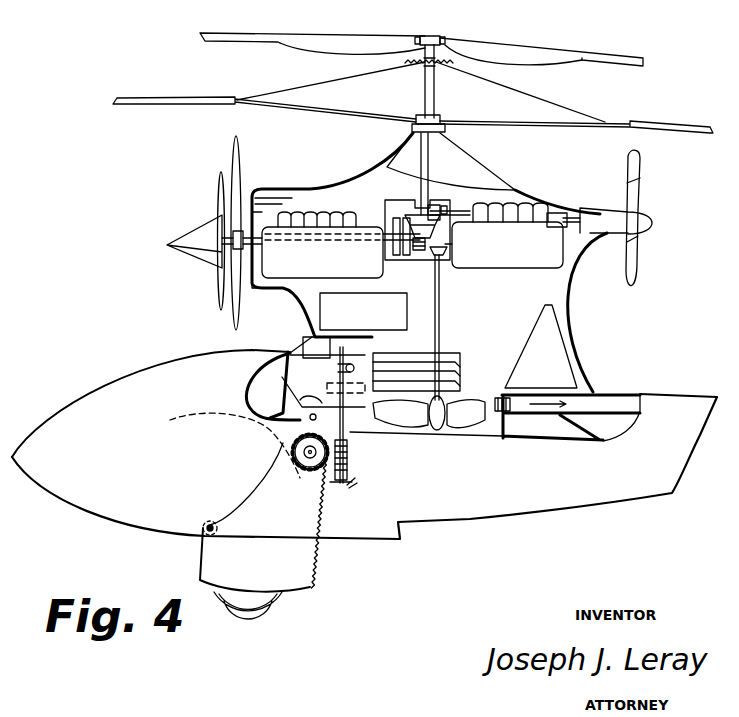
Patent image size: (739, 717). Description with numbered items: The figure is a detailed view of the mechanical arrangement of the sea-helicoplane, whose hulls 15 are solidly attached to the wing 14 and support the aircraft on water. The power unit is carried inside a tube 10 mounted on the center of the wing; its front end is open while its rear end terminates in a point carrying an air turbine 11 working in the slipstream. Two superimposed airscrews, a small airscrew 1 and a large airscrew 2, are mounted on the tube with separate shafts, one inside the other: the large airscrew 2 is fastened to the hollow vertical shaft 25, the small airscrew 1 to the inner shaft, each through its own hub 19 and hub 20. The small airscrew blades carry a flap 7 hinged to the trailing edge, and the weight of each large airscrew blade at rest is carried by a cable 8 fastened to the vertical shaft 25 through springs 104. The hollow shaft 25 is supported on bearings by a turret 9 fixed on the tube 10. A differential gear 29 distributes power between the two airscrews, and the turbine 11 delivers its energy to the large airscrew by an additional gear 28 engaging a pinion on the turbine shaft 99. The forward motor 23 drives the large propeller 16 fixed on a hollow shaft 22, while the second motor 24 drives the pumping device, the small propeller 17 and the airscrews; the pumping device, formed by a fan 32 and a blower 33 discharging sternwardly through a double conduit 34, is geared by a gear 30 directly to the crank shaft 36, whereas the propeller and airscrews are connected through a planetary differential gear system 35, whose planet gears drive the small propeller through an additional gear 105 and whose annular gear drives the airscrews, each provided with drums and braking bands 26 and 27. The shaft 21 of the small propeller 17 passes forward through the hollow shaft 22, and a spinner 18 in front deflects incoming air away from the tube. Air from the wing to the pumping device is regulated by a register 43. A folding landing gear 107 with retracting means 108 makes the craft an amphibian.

The small airscrew 1 is at (219, 35).
The large airscrew 2 is at (199, 103).
The flap 7 is at (431, 54).
The cable 8 is at (520, 92).
The turret 9 is at (451, 161).
The tube 10 is at (332, 235).
The air turbine 11 is at (628, 176).
The wing 14 is at (262, 398).
The hull 15 is at (364, 422).
The large propeller 16 is at (231, 162).
The small propeller 17 is at (217, 195).
The spinner 18 is at (194, 232).
The hub of small airscrew 19 is at (441, 39).
The hub of large airscrew 20 is at (437, 119).
The shaft of small propeller 21 is at (232, 270).
The hollow shaft 22 is at (252, 291).
The forward motor 23 is at (322, 245).
The second motor 24 is at (507, 235).
The hollow vertical shaft 25 is at (433, 100).
The annular gear braking band 26 is at (412, 214).
The planet gear braking band 27 is at (396, 220).
The additional gear 28 is at (445, 214).
The differential gear 29 is at (448, 246).
The gear 30 is at (445, 258).
The fan 32 is at (462, 428).
The blower 33 is at (500, 402).
The double conduit 34 is at (613, 398).
The planetary differential gear system 35 is at (413, 256).
The crank shaft 36 is at (426, 262).
The register 43 is at (422, 364).
The turbine shaft 99 is at (557, 200).
The springs 104 is at (345, 80).
The additional gear 105 is at (390, 243).
The folding landing gear 107 is at (240, 516).
The retracting means 108 is at (346, 458).